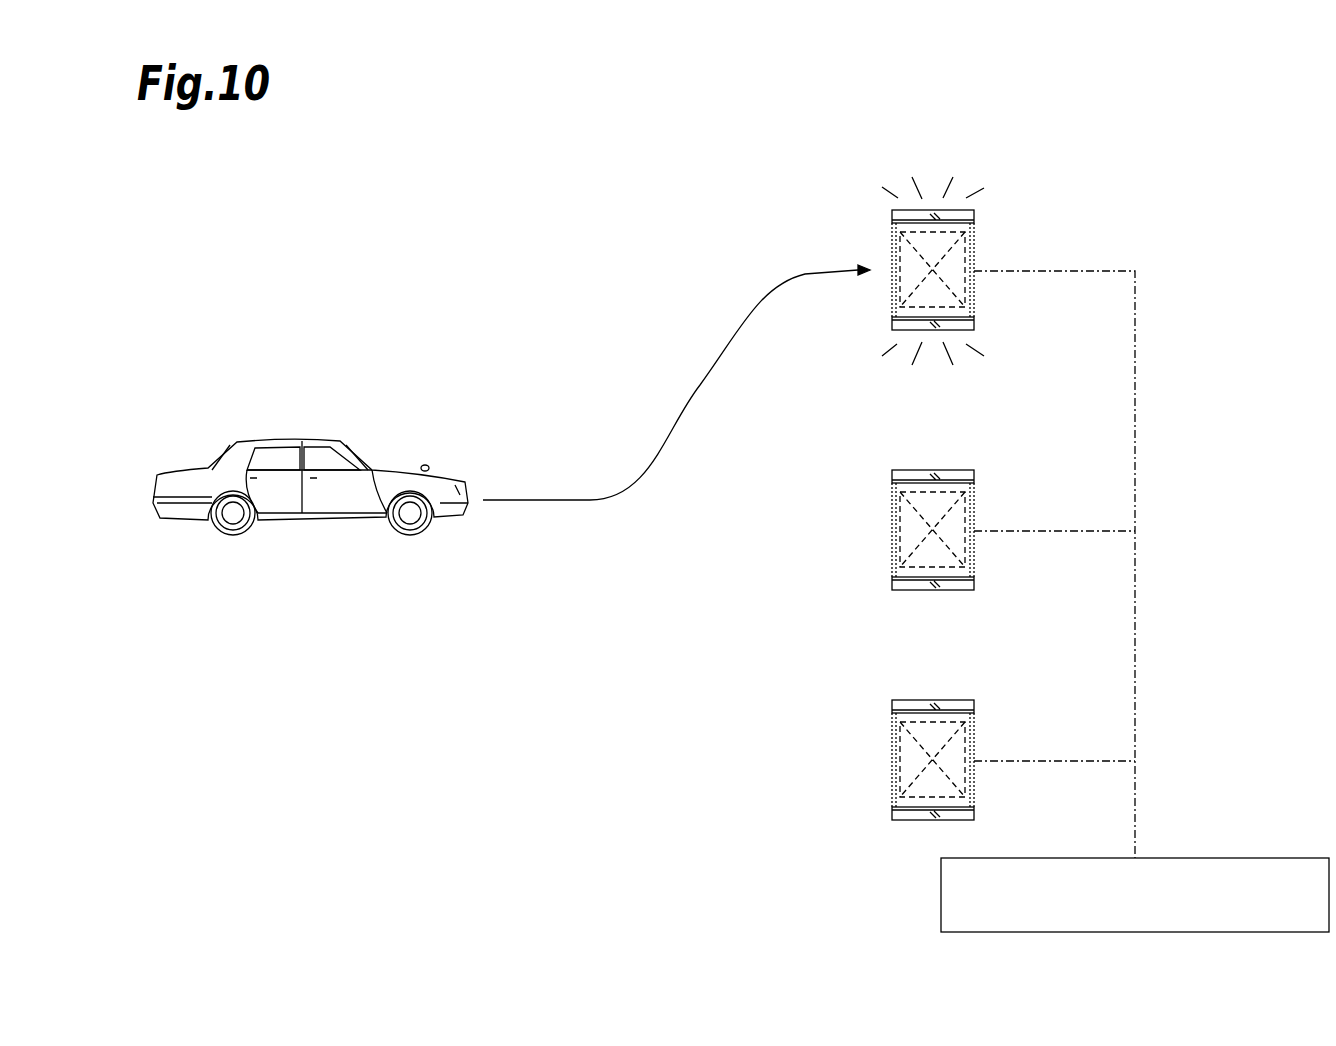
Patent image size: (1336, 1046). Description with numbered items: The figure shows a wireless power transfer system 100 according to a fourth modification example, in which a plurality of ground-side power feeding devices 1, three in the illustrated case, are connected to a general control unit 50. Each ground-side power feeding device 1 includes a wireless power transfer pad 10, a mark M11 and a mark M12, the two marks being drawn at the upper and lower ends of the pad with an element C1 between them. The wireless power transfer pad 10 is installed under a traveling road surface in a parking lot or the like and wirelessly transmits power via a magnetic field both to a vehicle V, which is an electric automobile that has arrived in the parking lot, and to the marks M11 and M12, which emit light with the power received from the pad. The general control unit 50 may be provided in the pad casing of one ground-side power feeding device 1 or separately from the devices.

The ground-side power feeding device 1 is at (939, 465).
The wireless power transfer pad 10 is at (976, 227).
The mark (light emitting unit) M11 is at (892, 213).
The mark (light emitting unit) M12 is at (892, 321).
The control circuit C1 is at (972, 280).
The vehicle V is at (301, 437).
The wireless power transfer system 100 is at (1210, 341).
The general control unit 50 is at (1243, 858).